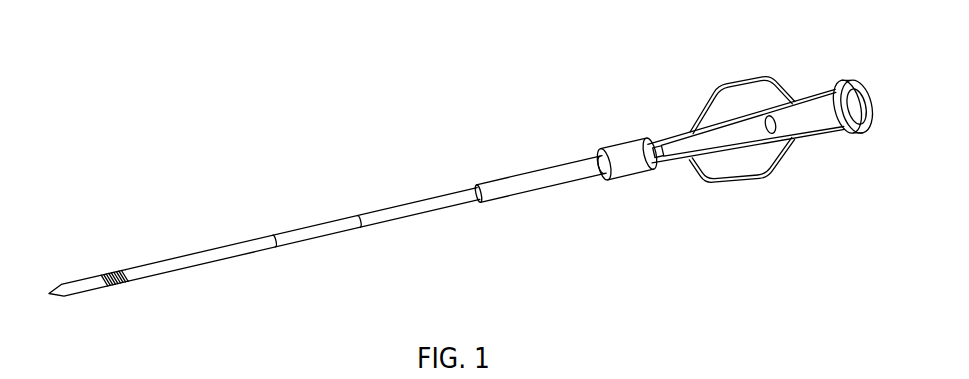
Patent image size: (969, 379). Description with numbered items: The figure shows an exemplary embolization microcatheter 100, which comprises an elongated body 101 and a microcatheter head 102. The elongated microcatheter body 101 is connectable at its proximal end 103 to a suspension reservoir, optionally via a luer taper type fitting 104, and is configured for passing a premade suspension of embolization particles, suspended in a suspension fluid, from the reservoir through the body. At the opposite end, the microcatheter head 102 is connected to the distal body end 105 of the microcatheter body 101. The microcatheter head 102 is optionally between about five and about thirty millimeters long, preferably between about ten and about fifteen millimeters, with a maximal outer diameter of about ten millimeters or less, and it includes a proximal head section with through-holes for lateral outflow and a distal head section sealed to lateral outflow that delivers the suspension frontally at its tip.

The embolization microcatheter 100 is at (460, 192).
The elongated body 101 is at (355, 222).
The microcatheter head 102 is at (88, 285).
The proximal end 103 is at (761, 128).
The luer taper type fitting 104 is at (742, 131).
The distal body end 105 is at (114, 278).